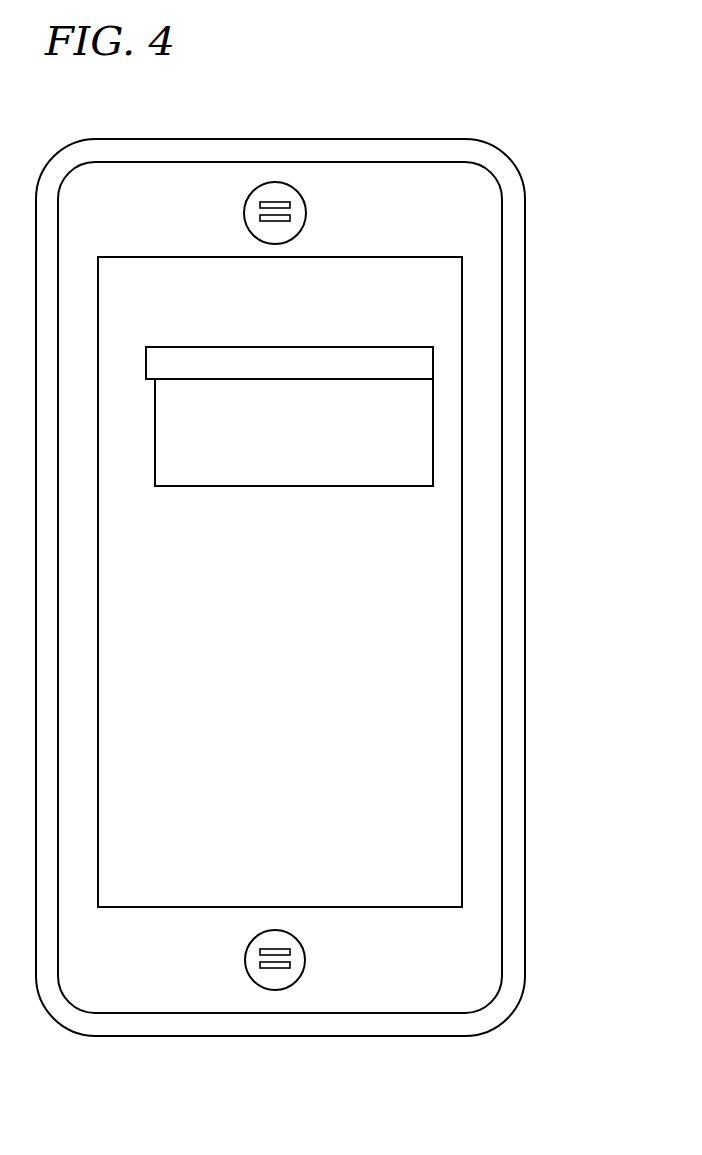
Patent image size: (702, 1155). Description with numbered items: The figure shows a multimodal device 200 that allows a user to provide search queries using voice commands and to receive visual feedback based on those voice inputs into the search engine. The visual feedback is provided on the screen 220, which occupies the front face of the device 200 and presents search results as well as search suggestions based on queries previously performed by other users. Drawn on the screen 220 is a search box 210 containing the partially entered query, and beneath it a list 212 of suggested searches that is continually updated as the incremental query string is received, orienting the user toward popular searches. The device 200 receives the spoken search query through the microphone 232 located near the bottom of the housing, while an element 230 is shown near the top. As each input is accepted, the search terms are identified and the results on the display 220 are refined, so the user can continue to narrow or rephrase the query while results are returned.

The multimodal device 200 is at (439, 139).
The search box 210 is at (430, 365).
The suggestion list 212 is at (412, 447).
The screen 220 is at (440, 671).
The top button 230 is at (277, 182).
The microphone 232 is at (270, 985).